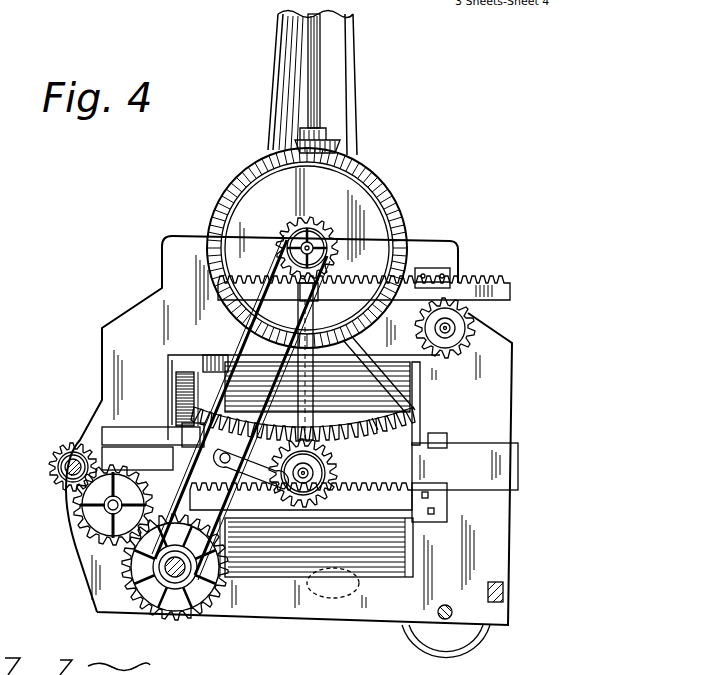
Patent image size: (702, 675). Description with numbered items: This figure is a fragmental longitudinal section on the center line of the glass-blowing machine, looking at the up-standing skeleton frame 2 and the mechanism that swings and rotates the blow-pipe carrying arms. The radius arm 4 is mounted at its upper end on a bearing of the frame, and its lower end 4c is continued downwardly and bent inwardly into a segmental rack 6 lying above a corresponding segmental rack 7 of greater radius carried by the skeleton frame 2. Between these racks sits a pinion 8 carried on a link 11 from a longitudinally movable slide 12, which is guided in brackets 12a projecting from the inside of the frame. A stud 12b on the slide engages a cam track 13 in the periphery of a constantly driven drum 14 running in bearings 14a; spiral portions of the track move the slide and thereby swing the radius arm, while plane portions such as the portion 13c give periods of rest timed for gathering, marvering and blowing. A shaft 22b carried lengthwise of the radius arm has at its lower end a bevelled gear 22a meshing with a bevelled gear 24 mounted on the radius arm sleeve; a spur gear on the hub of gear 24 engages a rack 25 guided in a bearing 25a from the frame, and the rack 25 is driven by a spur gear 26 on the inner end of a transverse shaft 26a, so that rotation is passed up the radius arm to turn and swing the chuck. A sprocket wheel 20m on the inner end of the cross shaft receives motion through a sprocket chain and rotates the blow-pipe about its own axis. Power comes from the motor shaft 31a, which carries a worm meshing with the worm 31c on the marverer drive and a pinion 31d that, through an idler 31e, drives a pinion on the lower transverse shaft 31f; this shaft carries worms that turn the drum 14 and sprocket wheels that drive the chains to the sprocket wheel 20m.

The skeleton frame 2 is at (132, 294).
The radius arm 4 is at (340, 70).
The lower end of the radius arm 4c is at (222, 366).
The segmental rack 6 is at (375, 418).
The segmental rack 7 is at (445, 502).
The pinion 8 is at (318, 476).
The link 11 is at (187, 437).
The slide 12 is at (505, 470).
The brackets 12a is at (455, 468).
The stud 12b is at (333, 583).
The cam track 13 is at (234, 548).
The portion of cam track 13c is at (418, 420).
The drum 14 is at (380, 560).
The bearings 14a is at (183, 386).
The sprocket wheel 20m is at (290, 240).
The bevelled gear 22a is at (343, 148).
The shaft 22b is at (316, 62).
The bevelled gear 24 is at (388, 192).
The rack 25 is at (364, 299).
The bearing 25a is at (437, 270).
The spur gear 26 is at (457, 330).
The transverse shaft 26a is at (449, 322).
The shaft 31a is at (62, 470).
The worm 31c is at (165, 602).
The pinion 31d is at (70, 444).
The idler 31e is at (83, 515).
The lower transverse shaft 31f is at (168, 570).